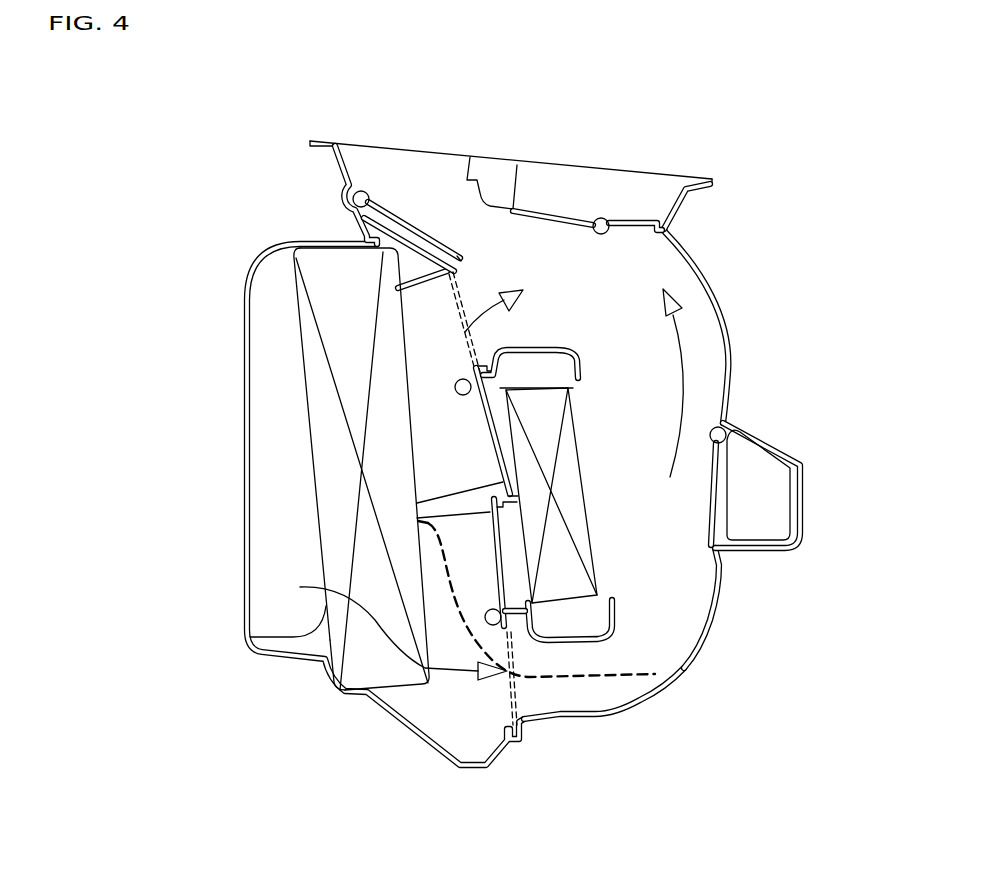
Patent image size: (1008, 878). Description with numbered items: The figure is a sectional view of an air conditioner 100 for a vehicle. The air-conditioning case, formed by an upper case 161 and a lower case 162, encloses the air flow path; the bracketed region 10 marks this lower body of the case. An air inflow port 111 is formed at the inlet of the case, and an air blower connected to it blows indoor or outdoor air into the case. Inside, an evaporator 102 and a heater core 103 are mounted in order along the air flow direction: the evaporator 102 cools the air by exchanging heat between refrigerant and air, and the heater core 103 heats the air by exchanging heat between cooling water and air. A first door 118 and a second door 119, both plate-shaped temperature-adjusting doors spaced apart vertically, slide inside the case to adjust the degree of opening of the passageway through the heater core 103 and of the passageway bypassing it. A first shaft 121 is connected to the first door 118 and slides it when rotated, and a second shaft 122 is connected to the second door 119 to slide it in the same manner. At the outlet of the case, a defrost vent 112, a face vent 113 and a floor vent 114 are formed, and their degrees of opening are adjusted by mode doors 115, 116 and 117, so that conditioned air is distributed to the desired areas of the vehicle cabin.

The air conditioner 100 is at (766, 206).
The lower body 10 is at (782, 657).
The evaporator 102 is at (333, 482).
The heater core 103 is at (563, 547).
The air inflow port 111 is at (275, 598).
The defrost vent 112 is at (408, 173).
The face vent 113 is at (570, 188).
The floor vent 114 is at (763, 483).
The mode door 115 is at (387, 230).
The mode door 116 is at (620, 228).
The mode door 117 is at (717, 470).
The first door 118 is at (497, 450).
The second door 119 is at (340, 693).
The first shaft 121 is at (460, 378).
The second shaft 122 is at (483, 617).
The upper case 161 is at (700, 647).
The lower case 162 is at (643, 693).